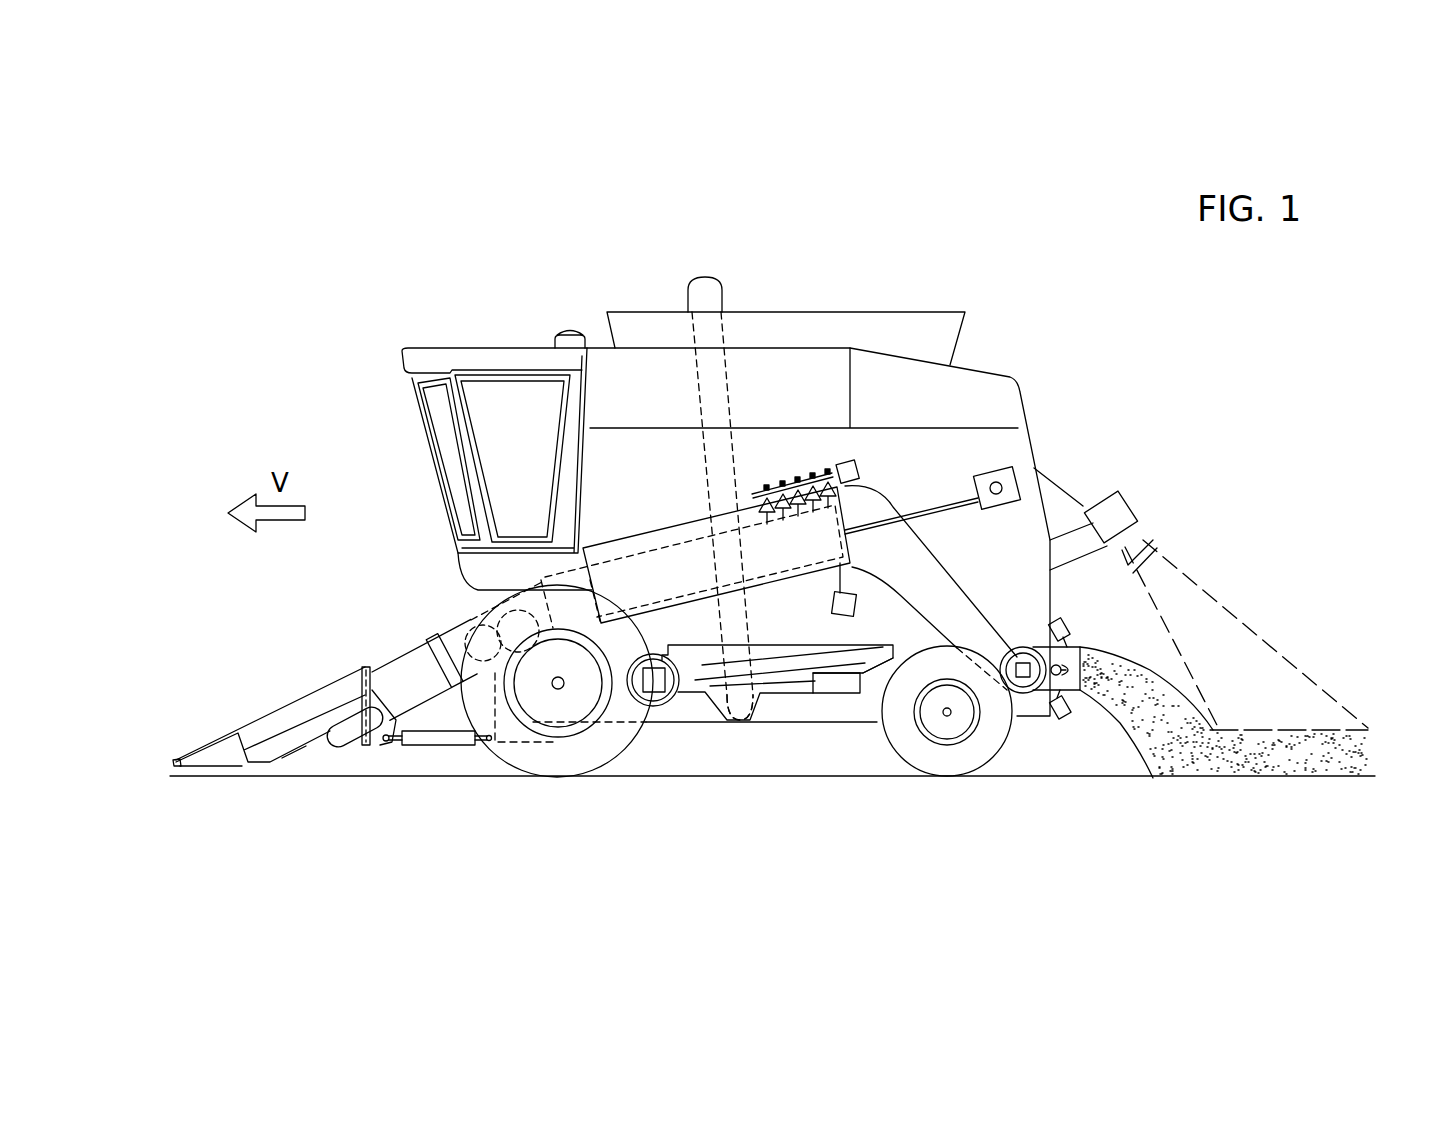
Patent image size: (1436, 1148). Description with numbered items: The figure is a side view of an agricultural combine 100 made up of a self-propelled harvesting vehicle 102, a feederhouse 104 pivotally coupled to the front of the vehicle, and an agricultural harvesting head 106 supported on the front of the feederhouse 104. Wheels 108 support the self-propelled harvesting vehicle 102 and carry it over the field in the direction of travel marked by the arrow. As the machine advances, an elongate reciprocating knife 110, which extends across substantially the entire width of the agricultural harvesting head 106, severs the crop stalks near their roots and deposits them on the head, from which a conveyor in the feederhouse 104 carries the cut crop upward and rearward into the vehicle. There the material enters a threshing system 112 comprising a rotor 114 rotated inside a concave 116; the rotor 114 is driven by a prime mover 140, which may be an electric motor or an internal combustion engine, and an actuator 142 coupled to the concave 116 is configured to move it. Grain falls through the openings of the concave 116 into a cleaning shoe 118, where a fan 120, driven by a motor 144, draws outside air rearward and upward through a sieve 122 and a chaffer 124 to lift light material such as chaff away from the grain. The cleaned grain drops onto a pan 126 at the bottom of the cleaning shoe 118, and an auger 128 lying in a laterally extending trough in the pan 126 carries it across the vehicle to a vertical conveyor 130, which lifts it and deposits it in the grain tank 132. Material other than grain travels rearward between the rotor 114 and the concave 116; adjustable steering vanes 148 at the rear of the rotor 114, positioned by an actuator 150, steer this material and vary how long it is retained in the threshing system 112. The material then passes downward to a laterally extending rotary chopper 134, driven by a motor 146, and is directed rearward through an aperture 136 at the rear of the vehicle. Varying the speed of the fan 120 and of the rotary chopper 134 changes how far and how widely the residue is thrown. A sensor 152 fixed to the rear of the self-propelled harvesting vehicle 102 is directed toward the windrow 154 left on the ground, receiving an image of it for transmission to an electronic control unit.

The agricultural combine 100 is at (848, 203).
The self-propelled harvesting vehicle 102 is at (455, 348).
The feederhouse 104 is at (397, 662).
The agricultural harvesting head 106 is at (283, 705).
The wheels 108 is at (540, 768).
The elongate reciprocating knife 110 is at (177, 760).
The threshing system 112 is at (635, 398).
The rotor 114 is at (612, 555).
The concave 116 is at (668, 606).
The cleaning shoe 118 is at (772, 780).
The fan 120 is at (655, 705).
The sieve 122 is at (774, 660).
The chaffer 124 is at (806, 670).
The pan 126 is at (839, 678).
The auger 128 is at (716, 735).
The vertical conveyor 130 is at (722, 293).
The grain tank 132 is at (860, 312).
The rotary chopper 134 is at (1032, 700).
The aperture 136 is at (1116, 800).
The prime mover 140 is at (1012, 474).
The actuator 142 is at (833, 605).
The motor 144 is at (660, 693).
The motor 146 is at (1023, 664).
The steering vanes 148 is at (798, 482).
The actuator 150 is at (858, 470).
The sensor 152 is at (1142, 505).
The windrow 154 is at (1295, 729).